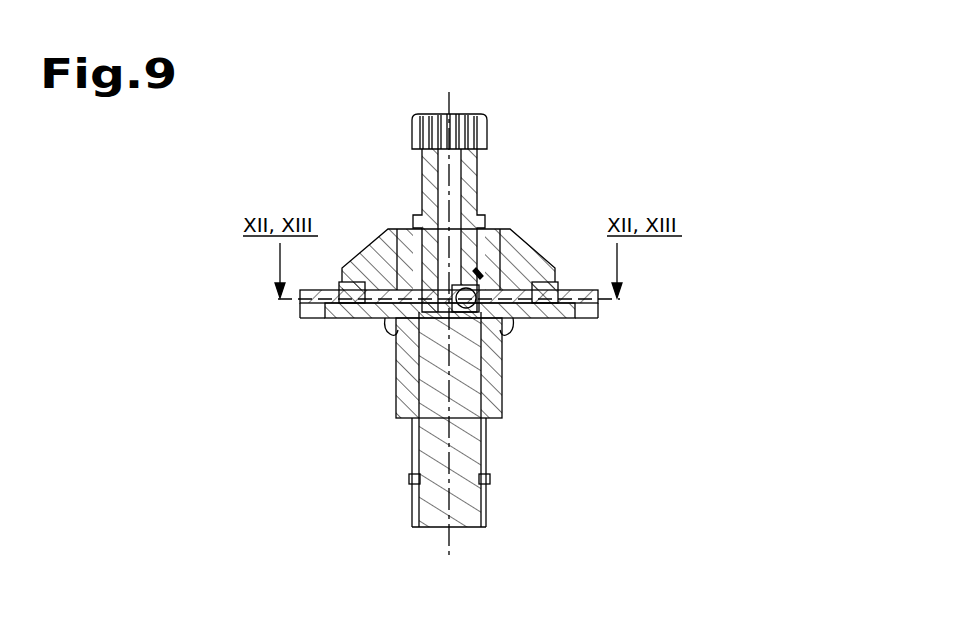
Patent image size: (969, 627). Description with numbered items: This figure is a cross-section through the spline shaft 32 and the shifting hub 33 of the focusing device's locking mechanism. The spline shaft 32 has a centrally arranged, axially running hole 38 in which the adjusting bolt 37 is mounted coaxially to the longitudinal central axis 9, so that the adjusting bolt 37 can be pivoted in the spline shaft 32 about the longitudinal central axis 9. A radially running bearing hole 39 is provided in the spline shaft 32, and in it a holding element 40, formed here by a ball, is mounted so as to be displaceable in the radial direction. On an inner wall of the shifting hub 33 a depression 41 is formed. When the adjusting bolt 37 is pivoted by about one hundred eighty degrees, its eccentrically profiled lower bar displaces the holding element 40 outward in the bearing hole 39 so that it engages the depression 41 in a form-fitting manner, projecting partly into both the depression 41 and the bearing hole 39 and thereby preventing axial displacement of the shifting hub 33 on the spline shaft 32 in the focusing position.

The longitudinal central axis 9 is at (440, 97).
The spline shaft 32 is at (499, 519).
The shifting hub 33 is at (633, 301).
The adjusting bolt 37 is at (497, 105).
The hole 38 is at (462, 180).
The bearing hole 39 is at (477, 291).
The holding element 40 is at (482, 272).
The depression 41 is at (470, 318).